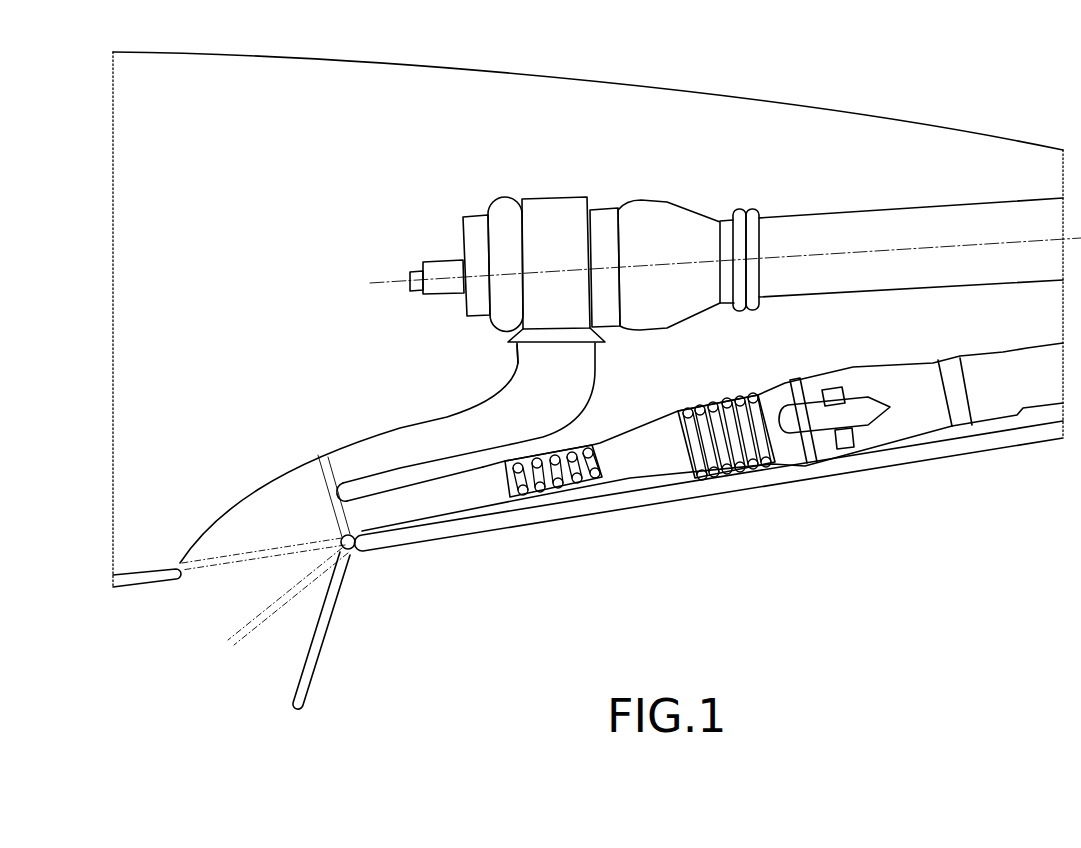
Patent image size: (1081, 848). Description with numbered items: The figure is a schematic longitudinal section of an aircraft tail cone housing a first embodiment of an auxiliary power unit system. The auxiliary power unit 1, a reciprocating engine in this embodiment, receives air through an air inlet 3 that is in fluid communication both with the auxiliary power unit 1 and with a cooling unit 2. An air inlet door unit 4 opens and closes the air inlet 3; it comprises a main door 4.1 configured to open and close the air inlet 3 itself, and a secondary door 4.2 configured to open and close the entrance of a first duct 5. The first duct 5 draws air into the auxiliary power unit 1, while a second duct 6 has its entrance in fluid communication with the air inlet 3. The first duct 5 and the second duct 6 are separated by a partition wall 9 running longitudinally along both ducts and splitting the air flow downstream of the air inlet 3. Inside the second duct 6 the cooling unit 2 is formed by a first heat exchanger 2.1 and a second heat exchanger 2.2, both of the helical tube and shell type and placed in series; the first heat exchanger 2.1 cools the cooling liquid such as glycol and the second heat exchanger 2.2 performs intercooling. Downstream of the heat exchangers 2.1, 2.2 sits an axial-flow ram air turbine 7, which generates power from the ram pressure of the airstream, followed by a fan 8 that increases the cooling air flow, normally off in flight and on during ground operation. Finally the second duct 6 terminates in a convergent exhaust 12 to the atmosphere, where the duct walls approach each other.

The auxiliary power unit 1 is at (657, 222).
The cooling unit 2 is at (702, 587).
The first heat exchanger 2.1 is at (757, 467).
The second heat exchanger 2.2 is at (563, 500).
The air inlet 3 is at (179, 614).
The air inlet door unit 4 is at (311, 567).
The main door 4.1 is at (298, 680).
The secondary door 4.2 is at (320, 458).
The first duct 5 is at (503, 410).
The second duct 6 is at (457, 500).
The air turbine 7 is at (826, 388).
The fan 8 is at (948, 368).
The partition wall 9 is at (430, 477).
The convergent exhaust 12 is at (917, 427).